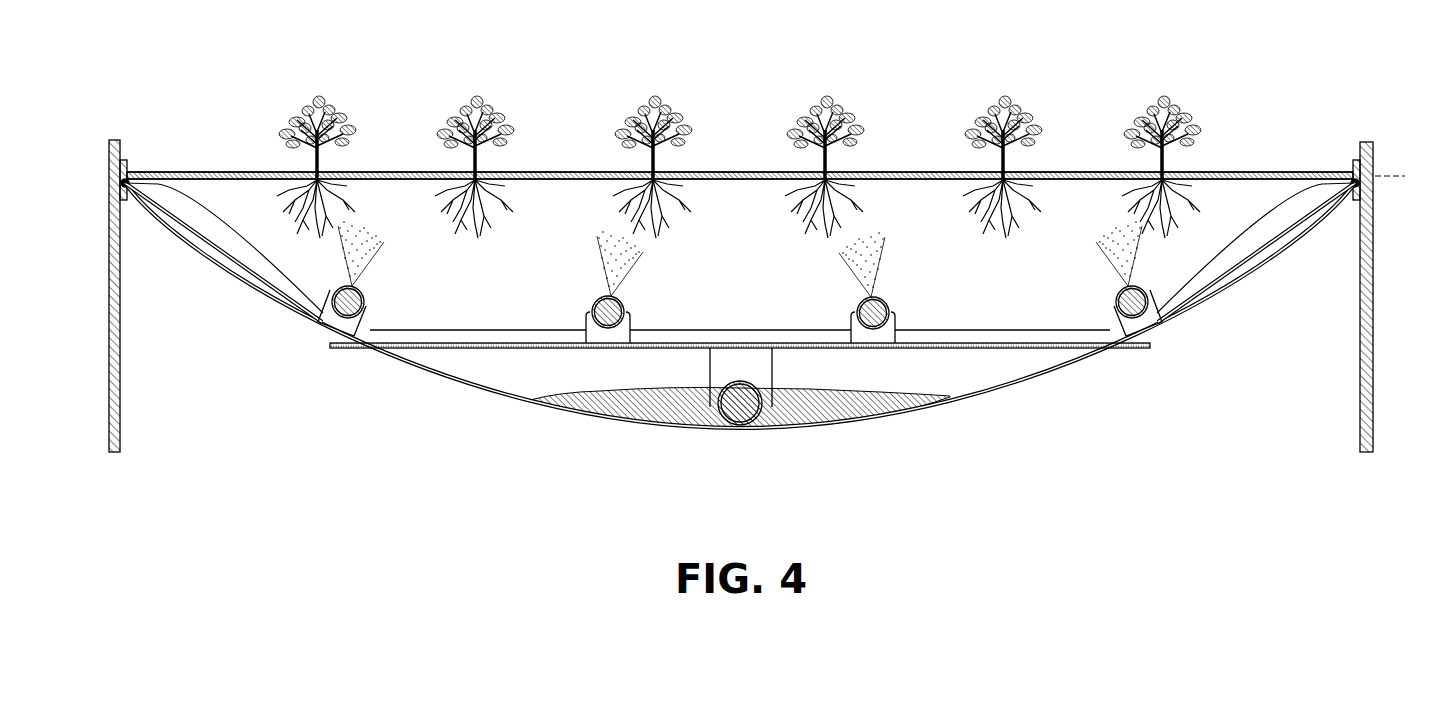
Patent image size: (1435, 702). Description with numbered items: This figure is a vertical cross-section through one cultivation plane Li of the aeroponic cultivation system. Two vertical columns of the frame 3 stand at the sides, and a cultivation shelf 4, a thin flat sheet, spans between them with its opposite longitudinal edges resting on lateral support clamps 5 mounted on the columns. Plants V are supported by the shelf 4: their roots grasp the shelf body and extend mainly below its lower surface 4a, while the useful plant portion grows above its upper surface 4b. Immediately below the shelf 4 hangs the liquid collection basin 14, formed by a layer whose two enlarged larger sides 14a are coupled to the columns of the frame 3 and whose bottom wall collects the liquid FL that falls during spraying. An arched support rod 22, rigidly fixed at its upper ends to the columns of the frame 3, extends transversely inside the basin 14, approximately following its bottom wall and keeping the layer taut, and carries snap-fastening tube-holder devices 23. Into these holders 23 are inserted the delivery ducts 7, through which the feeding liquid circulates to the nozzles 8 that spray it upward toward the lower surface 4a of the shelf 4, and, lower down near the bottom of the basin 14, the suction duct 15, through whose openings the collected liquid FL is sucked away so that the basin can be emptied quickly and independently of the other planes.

The frame 3 is at (109, 412).
The cultivation shelf 4 is at (172, 171).
The lower surface 4a is at (1262, 186).
The upper surface 4b is at (1249, 163).
The support clamp 5 is at (130, 208).
The delivery duct 7 is at (325, 312).
The nozzle 8 is at (354, 284).
The liquid collection basin 14 is at (1098, 360).
The larger side 14a is at (113, 193).
The suction duct 15 is at (730, 412).
The support rod 22 is at (421, 350).
The tube-holder device 23 is at (349, 322).
The plant V is at (335, 108).
The cultivation plane Li is at (1401, 177).
The liquid FL is at (657, 429).